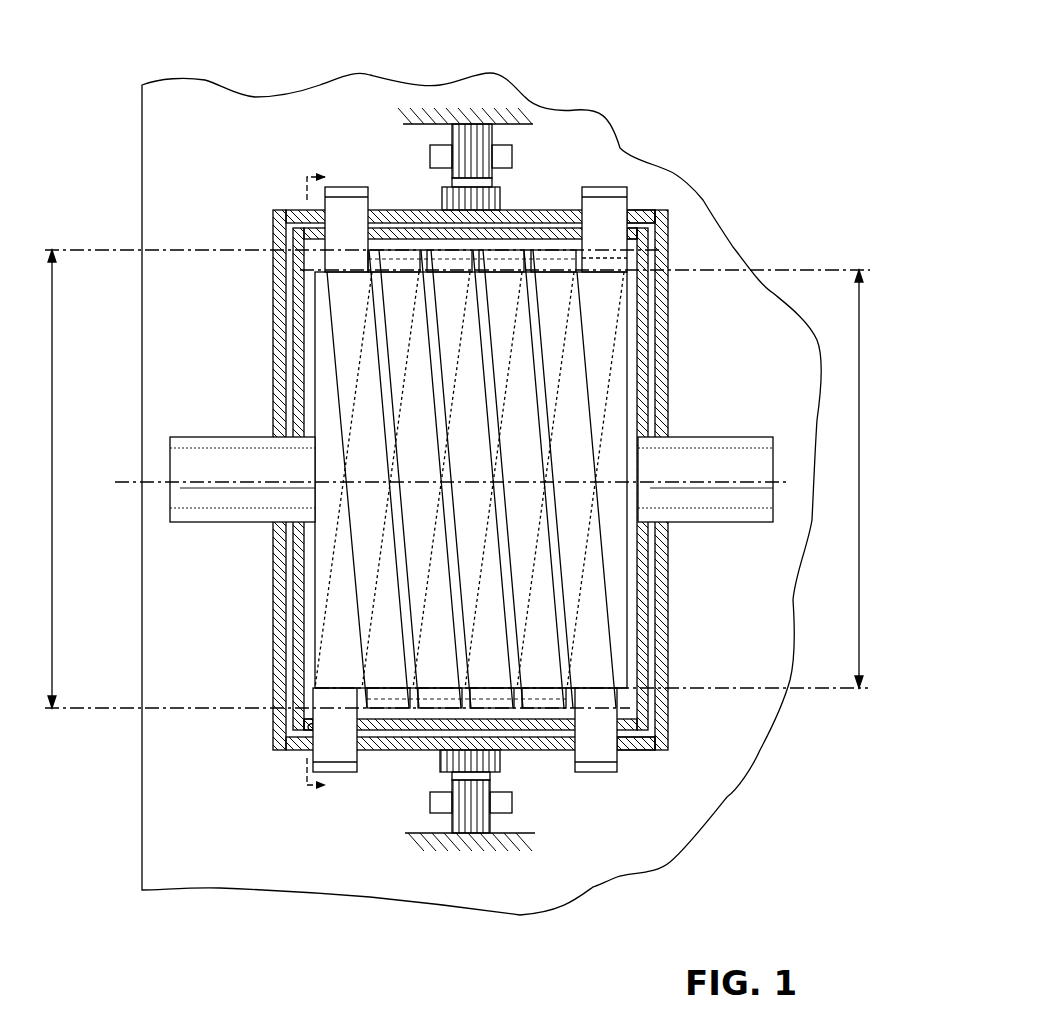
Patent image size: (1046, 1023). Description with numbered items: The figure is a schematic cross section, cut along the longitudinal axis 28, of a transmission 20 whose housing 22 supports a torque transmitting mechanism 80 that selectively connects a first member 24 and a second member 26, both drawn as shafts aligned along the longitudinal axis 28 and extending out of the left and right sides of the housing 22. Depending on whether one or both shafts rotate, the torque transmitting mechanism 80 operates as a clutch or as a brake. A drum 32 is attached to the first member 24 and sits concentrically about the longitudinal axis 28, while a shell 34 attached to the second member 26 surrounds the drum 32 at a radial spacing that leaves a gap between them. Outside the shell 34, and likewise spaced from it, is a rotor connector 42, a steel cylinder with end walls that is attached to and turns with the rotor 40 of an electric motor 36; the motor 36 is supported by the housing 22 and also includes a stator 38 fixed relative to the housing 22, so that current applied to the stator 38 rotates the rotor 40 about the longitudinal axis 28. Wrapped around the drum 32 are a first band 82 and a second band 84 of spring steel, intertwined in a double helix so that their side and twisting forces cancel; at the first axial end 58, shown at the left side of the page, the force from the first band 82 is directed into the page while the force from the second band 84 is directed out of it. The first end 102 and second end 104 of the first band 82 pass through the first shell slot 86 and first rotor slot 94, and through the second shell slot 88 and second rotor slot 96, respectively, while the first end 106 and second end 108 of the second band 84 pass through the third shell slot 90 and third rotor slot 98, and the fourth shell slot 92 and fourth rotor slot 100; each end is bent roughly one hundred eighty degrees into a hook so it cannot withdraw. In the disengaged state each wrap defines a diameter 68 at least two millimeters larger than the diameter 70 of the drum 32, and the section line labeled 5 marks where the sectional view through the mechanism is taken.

The transmission 20 is at (457, 458).
The housing 22 is at (620, 150).
The first member 24 is at (215, 453).
The second member 26 is at (748, 450).
The longitudinal axis 28 is at (125, 482).
The drum 32 is at (325, 372).
The shell 34 is at (512, 479).
The electric motor 36 is at (454, 106).
The stator 38 is at (494, 141).
The rotor 40 is at (495, 207).
The rotor connector 42 is at (662, 410).
The first axial end 58 is at (275, 568).
The diameter 68 is at (53, 318).
The diameter 70 is at (858, 640).
The torque transmitting mechanism 80 is at (466, 398).
The first band 82 is at (489, 480).
The second band 84 is at (617, 246).
The first shell slot 86 is at (323, 240).
The second shell slot 88 is at (583, 730).
The third shell slot 90 is at (307, 733).
The fourth shell slot 92 is at (629, 212).
The first rotor slot 94 is at (373, 212).
The second rotor slot 96 is at (615, 755).
The third rotor slot 98 is at (355, 748).
The fourth rotor slot 100 is at (587, 207).
The first end of the first band 102 is at (341, 186).
The second end of the first band 104 is at (603, 773).
The first end of the second band 106 is at (347, 775).
The second end of the second band 108 is at (617, 214).
The section line 5- 5 is at (316, 484).